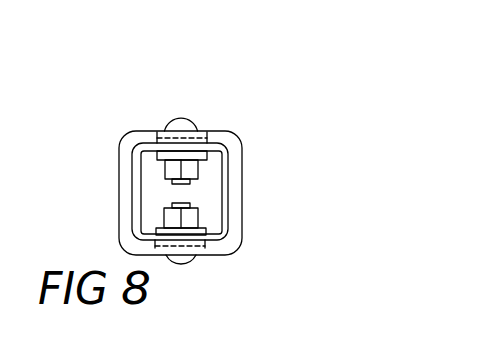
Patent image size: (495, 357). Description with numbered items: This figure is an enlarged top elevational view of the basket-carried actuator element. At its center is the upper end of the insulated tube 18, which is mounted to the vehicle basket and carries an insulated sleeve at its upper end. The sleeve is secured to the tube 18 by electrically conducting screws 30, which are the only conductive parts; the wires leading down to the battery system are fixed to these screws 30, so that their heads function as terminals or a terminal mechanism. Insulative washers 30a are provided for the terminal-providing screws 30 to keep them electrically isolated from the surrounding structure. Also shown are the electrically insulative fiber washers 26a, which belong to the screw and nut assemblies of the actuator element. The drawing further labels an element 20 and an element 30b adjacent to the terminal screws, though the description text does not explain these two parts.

The tube 18 is at (198, 176).
The body 20 is at (242, 221).
The electrically insulative fiber washers 26a is at (200, 133).
The electrically conducting screws 30 is at (145, 132).
The insulative washers 30a is at (208, 137).
The terminal body 30b is at (166, 174).